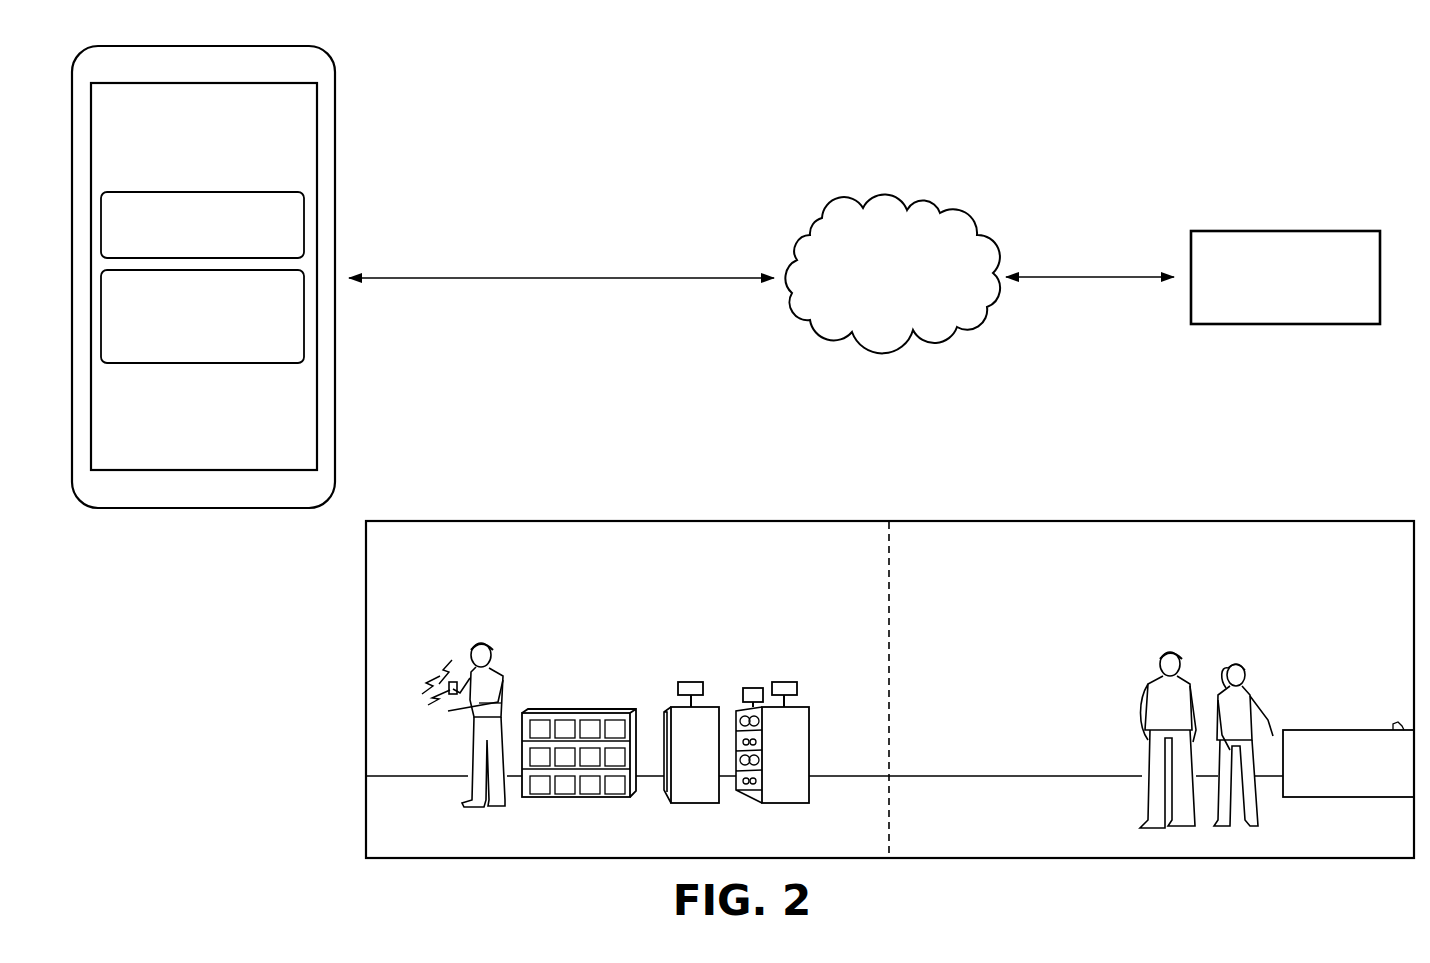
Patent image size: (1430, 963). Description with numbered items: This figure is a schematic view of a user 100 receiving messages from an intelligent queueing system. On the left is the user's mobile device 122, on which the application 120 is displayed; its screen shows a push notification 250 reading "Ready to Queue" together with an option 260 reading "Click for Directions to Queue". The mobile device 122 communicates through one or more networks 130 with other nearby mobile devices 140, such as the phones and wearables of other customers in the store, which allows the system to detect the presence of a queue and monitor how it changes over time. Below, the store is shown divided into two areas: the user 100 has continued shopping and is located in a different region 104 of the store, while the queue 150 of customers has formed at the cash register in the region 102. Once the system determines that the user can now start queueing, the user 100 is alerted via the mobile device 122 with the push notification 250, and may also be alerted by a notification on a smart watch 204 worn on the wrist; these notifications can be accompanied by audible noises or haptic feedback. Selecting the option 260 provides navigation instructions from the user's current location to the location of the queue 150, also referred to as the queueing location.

The user 100 is at (482, 676).
The region of the store 102 is at (1225, 644).
The different region of the store 104 is at (697, 558).
The application 120 is at (289, 403).
The mobile device 122 is at (335, 152).
The networks 130 is at (885, 200).
The nearby mobile devices 140 is at (1285, 230).
The queue 150 is at (1213, 630).
The smart watch 204 is at (463, 682).
The push notification 250 is at (203, 192).
The option 260 is at (209, 364).